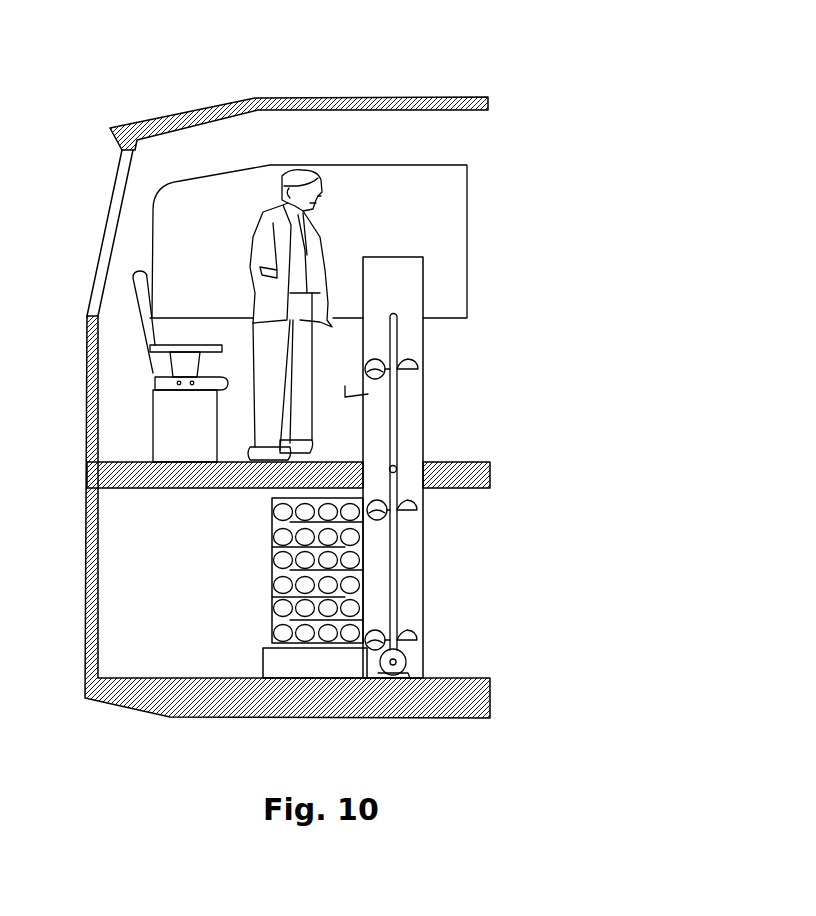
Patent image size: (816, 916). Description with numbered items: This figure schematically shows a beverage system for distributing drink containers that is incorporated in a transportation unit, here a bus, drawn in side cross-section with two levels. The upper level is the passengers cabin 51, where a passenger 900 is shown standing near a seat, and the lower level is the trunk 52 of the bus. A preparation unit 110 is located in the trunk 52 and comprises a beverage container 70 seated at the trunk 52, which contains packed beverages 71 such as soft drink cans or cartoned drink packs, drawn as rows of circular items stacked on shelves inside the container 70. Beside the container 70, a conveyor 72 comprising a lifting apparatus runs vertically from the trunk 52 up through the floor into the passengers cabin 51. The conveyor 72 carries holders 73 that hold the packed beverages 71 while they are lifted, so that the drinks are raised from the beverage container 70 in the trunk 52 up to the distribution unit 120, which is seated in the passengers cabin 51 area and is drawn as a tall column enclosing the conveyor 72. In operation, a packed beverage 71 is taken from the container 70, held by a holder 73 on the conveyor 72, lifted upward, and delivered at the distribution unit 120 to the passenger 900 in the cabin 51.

The passenger 900 is at (253, 193).
The passengers cabin 51 is at (620, 187).
The trunk 52 is at (558, 475).
The distribution unit 120 is at (397, 290).
The conveyor 72 is at (402, 556).
The holders 73 is at (415, 627).
The beverage container 70 is at (270, 513).
The packed beverages 71 is at (282, 607).
The preparation unit 110 is at (268, 662).